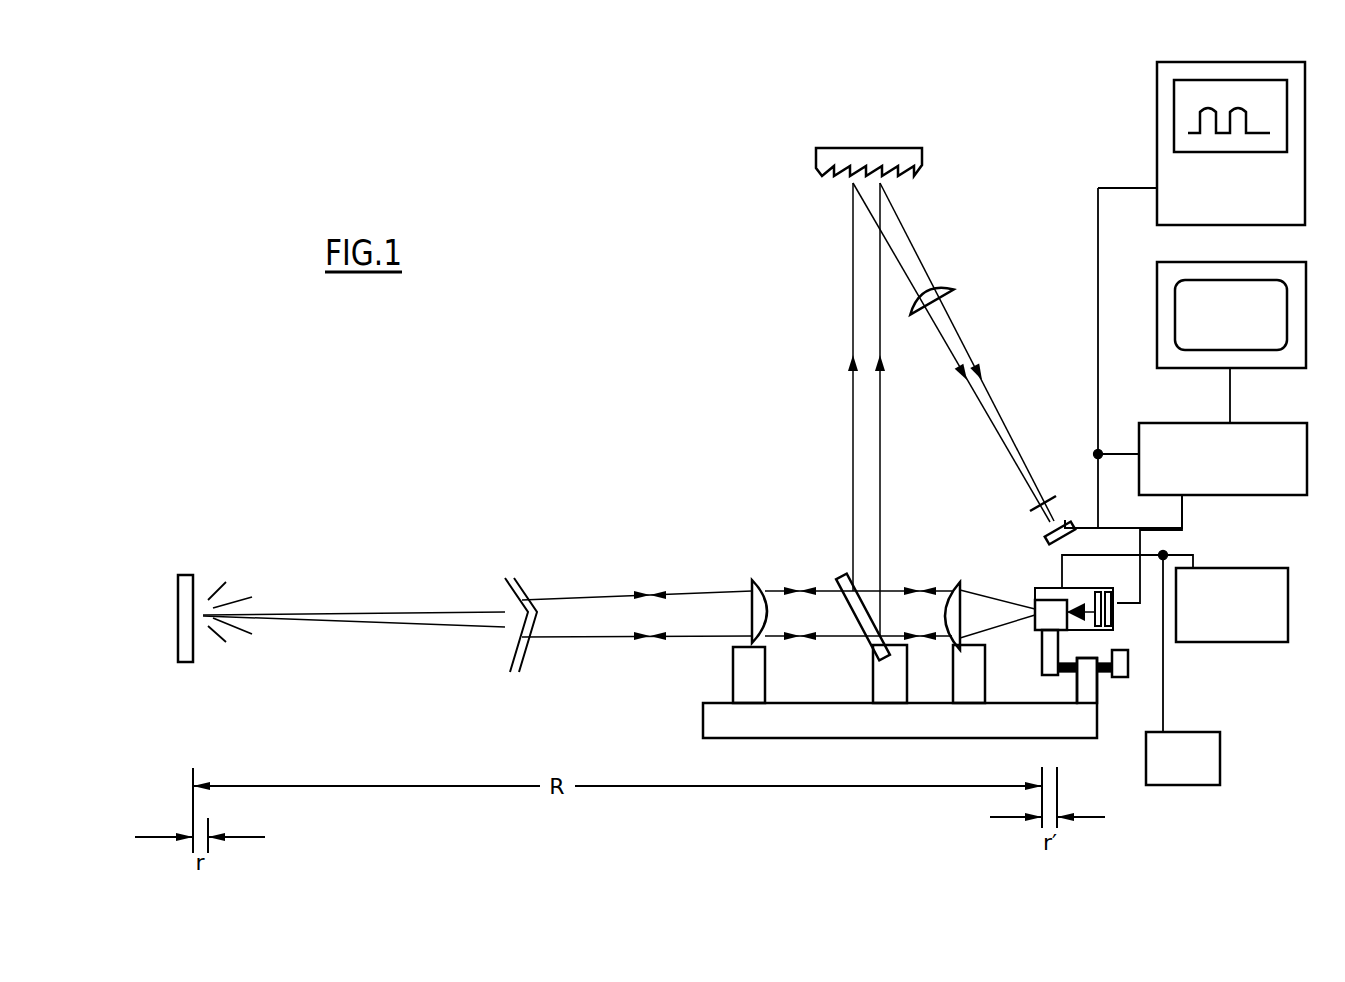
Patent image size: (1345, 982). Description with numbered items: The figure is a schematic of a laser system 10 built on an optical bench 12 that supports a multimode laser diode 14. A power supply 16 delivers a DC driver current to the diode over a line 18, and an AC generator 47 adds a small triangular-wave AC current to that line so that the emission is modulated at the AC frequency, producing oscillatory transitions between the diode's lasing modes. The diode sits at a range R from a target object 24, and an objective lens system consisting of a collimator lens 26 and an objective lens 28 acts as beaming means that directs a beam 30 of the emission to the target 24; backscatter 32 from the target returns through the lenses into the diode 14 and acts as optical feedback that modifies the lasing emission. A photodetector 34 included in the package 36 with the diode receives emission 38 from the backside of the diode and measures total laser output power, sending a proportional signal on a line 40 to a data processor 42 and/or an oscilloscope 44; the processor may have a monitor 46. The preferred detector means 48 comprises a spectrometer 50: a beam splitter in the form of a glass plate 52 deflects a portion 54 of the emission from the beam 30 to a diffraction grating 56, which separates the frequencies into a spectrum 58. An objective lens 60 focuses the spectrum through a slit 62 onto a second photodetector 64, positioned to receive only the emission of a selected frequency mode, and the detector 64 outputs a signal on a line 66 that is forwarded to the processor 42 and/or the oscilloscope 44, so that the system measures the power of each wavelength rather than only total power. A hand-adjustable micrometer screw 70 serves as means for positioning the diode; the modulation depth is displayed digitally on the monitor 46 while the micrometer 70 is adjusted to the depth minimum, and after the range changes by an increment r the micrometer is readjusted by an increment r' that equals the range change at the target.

The laser system 10 is at (660, 350).
The optical bench 12 is at (703, 706).
The laser diode 14 is at (1035, 615).
The power supply 16 is at (1268, 643).
The line 18 is at (1190, 560).
The target object 24 is at (195, 583).
The collimator lens 26 is at (955, 590).
The objective lens 28 is at (755, 582).
The beam 30 is at (608, 596).
The backscatter 32 is at (240, 630).
The photodetector 34 is at (1102, 632).
The package 36 is at (1040, 588).
The emission 38 is at (1083, 605).
The line 40 is at (1185, 518).
The data processor 42 is at (1198, 423).
The oscilloscope 44 is at (1157, 112).
The monitor 46 is at (1157, 310).
The AC generator 47 is at (1222, 760).
The detector means 48 is at (1030, 192).
The spectrometer 50 is at (930, 205).
The glass plate 52 is at (862, 590).
The portion of emission 54 is at (858, 415).
The diffraction grating 56 is at (830, 175).
The spectrum 58 is at (913, 262).
The objective lens 60 is at (955, 292).
The slit 62 is at (1038, 500).
The second photodetector 64 is at (1045, 522).
The line 66 is at (1097, 468).
The micrometer screw 70 is at (1130, 660).